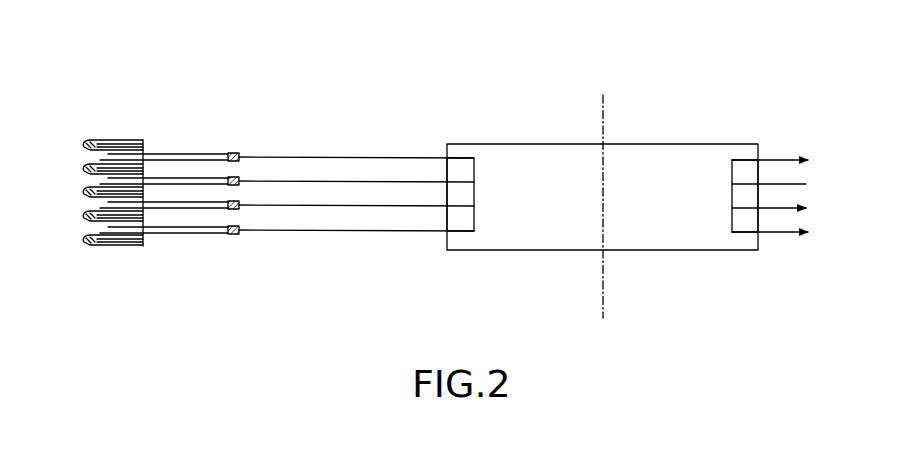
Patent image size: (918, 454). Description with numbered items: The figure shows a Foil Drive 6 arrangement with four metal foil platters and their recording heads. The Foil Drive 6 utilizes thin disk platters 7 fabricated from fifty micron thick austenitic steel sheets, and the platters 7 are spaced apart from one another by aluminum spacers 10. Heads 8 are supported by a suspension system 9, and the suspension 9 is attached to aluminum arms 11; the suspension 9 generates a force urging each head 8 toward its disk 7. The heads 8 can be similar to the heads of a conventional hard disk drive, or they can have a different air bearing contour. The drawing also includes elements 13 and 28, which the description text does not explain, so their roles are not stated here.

The Foil Drive 6 is at (625, 142).
The disk platters 7 is at (353, 157).
The heads 8 is at (236, 152).
The suspension system 9 is at (160, 148).
The aluminum spacers 10 is at (750, 177).
The aluminum arms 11 is at (84, 146).
The housing body 13 is at (622, 243).
The housing 28 is at (662, 146).